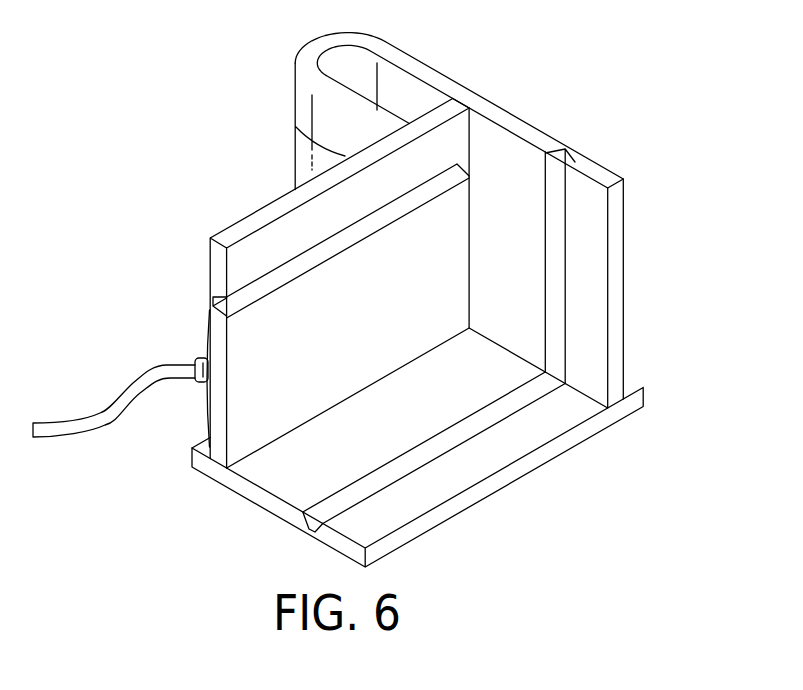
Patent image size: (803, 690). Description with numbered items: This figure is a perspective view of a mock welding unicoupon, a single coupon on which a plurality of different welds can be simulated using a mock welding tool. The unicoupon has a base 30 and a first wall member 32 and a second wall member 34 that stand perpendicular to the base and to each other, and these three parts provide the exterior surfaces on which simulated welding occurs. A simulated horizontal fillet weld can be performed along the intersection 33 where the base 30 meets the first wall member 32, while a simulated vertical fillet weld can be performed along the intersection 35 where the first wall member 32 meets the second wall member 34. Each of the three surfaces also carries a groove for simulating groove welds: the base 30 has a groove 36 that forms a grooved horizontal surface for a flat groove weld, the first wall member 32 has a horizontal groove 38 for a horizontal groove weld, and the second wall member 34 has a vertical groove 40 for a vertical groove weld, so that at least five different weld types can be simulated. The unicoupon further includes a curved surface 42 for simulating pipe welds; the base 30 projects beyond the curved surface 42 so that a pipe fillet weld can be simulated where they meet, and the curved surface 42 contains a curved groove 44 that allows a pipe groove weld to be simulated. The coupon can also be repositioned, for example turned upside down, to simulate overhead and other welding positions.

The base 30 is at (498, 493).
The first wall member 32 is at (248, 217).
The intersection of the base and the first wall member 33 is at (262, 450).
The second wall member 34 is at (508, 108).
The intersection of the first and second wall members 35 is at (473, 217).
The groove 36 is at (315, 518).
The horizontal groove 38 is at (207, 320).
The vertical groove 40 is at (557, 233).
The curved surface 42 is at (313, 43).
The curved groove 44 is at (295, 143).